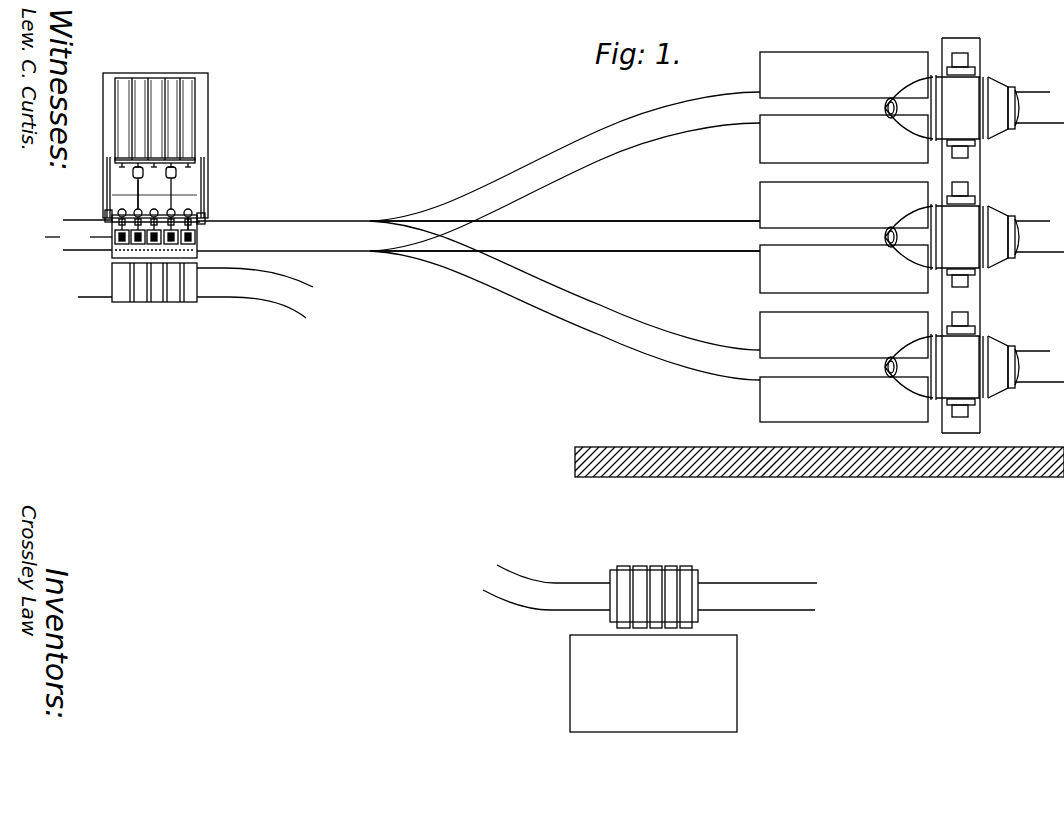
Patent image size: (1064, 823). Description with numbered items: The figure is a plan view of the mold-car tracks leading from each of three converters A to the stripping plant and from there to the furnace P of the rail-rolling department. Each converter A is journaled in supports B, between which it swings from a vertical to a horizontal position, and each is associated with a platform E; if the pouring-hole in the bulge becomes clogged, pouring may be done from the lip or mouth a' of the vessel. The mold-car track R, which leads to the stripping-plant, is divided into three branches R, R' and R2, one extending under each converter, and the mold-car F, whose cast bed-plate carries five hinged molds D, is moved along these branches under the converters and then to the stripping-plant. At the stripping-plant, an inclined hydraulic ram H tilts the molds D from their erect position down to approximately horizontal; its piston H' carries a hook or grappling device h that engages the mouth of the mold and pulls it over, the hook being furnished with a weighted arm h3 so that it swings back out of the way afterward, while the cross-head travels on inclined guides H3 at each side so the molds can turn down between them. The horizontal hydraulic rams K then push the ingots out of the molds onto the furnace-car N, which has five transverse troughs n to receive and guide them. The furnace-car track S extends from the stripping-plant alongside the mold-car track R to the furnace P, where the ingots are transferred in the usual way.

The hydraulic ram K is at (180, 105).
The inclined hydraulic ram H is at (191, 181).
The piston H' is at (148, 194).
The inclined guides H3 is at (203, 188).
The weighted arm h3 is at (192, 212).
The hook or grappling device h is at (201, 224).
The mold D is at (78, 235).
The mold-car F is at (118, 247).
The furnace-car N is at (122, 290).
The transverse troughs n is at (156, 296).
The furnace-car track S is at (447, 439).
The mold-car track R is at (565, 171).
The branch of mold-car track R' is at (565, 236).
The branch of mold-car track R2 is at (565, 300).
The platform E is at (844, 237).
The converter A is at (974, 235).
The lip or mouth of the vessel a' is at (882, 247).
The supports B is at (960, 62).
The furnace P is at (653, 683).